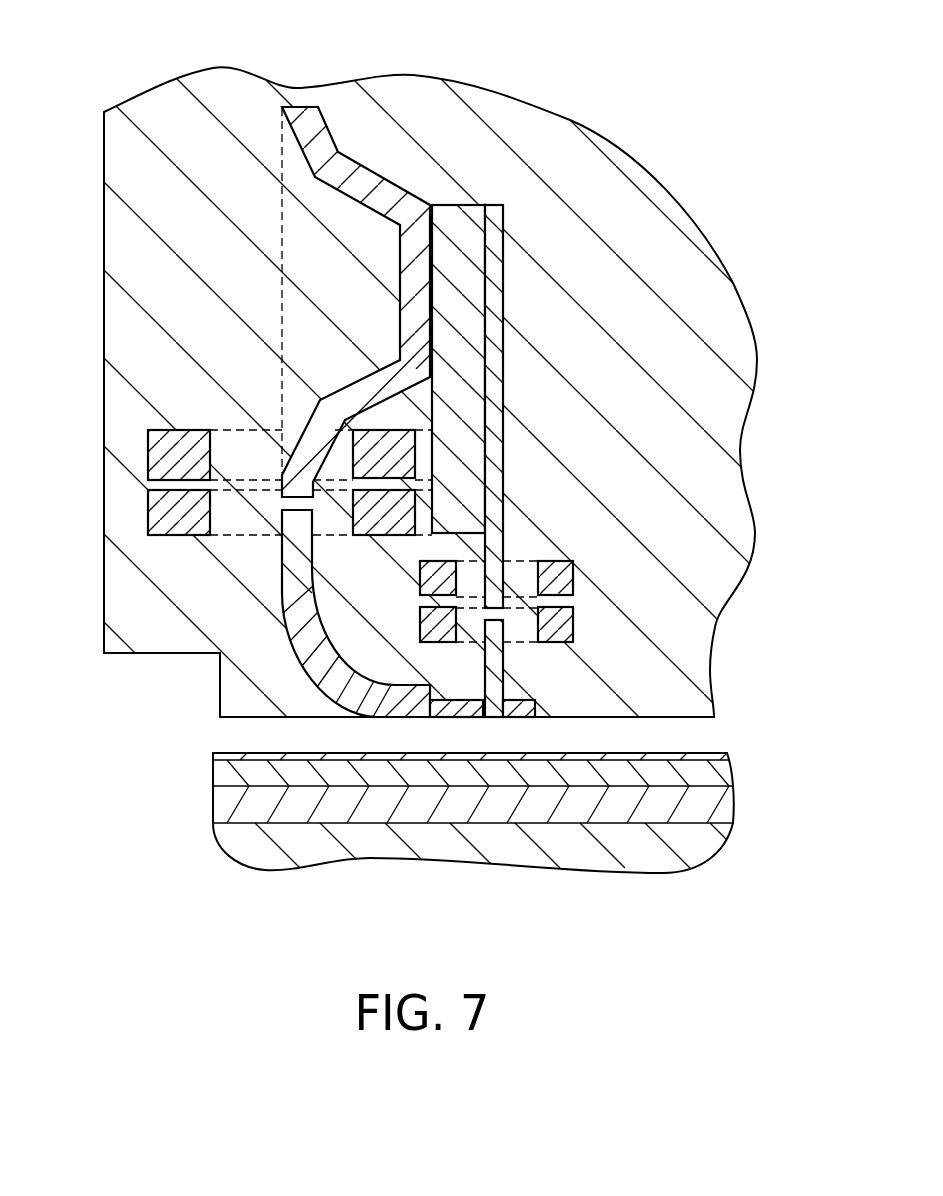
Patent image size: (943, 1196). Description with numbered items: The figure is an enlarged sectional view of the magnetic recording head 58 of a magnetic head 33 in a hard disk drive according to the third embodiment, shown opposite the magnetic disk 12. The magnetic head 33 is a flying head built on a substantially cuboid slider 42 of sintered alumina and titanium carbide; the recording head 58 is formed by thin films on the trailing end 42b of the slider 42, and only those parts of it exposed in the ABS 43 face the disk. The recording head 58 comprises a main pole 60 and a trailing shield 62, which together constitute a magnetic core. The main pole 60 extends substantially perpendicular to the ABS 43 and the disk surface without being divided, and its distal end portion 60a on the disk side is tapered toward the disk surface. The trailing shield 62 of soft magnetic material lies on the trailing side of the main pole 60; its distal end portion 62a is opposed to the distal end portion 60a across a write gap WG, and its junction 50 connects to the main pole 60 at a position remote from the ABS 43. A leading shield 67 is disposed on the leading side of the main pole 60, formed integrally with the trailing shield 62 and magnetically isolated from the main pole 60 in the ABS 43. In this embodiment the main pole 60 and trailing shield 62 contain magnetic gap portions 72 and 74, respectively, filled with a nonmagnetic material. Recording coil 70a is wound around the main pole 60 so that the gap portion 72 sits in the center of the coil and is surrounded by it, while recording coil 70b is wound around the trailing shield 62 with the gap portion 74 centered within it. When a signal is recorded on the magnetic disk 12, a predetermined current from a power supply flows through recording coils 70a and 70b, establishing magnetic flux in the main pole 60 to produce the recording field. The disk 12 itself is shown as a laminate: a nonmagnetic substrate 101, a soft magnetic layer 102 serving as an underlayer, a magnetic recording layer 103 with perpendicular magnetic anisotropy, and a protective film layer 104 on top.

The magnetic head 33 is at (416, 480).
The magnetic recording head 58 is at (380, 102).
The slider 42 is at (677, 197).
The trailing end 42b is at (104, 372).
The ABS 43 is at (657, 717).
The junction 50 is at (407, 277).
The main pole 60 is at (473, 320).
The distal end portion 60a is at (493, 717).
The trailing shield 62 is at (285, 583).
The distal end portion 62a is at (450, 717).
The leading shield 67 is at (518, 717).
The write gap WG is at (485, 717).
The recording coil 70a is at (570, 620).
The recording coil 70b is at (150, 500).
The magnetic gap portion 72 is at (570, 628).
The magnetic gap portion 74 is at (287, 503).
The magnetic disk 12 is at (484, 800).
The substrate 101 is at (505, 845).
The soft magnetic layer 102 is at (474, 804).
The magnetic recording layer 103 is at (474, 773).
The protective film layer 104 is at (471, 756).